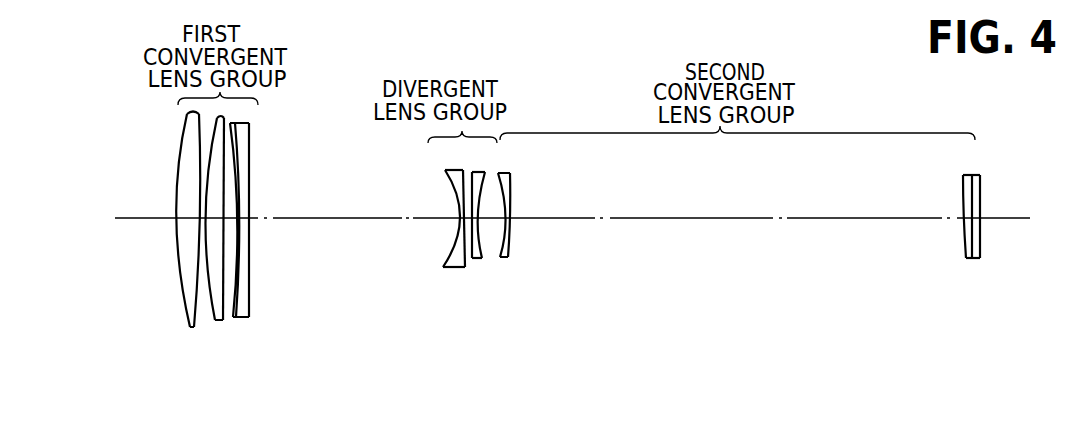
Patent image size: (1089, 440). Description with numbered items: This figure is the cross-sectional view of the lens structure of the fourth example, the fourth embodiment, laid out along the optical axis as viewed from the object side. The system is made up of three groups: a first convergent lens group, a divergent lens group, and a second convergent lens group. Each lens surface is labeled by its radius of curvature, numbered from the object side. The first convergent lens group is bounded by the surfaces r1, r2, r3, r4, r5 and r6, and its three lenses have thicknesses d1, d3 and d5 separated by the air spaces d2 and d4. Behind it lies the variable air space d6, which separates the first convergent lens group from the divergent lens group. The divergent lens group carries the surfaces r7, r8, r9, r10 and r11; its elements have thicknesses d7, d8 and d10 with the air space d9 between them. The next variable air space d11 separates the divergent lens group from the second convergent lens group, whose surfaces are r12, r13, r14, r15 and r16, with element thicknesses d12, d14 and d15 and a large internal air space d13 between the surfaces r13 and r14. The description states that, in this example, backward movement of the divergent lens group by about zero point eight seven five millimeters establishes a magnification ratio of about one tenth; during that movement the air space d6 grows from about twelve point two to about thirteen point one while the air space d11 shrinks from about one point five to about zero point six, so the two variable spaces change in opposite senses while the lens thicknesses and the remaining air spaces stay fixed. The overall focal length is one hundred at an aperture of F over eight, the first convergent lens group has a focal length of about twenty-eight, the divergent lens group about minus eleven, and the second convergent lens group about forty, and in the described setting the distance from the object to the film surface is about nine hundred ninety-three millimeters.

The radius of curvature of first lens surface r1 is at (182, 304).
The radius of curvature of second lens surface r2 is at (195, 320).
The radius of curvature of third lens surface r3 is at (212, 305).
The radius of curvature of fourth lens surface r4 is at (228, 318).
The radius of curvature of fifth lens surface r5 is at (240, 312).
The radius of curvature of sixth lens surface r6 is at (252, 310).
The radius of curvature of seventh lens surface r7 is at (443, 268).
The radius of curvature of eighth lens surface r8 is at (453, 268).
The radius of curvature of ninth lens surface r9 is at (467, 265).
The radius of curvature of tenth lens surface r10 is at (476, 262).
The radius of curvature of eleventh lens surface r11 is at (483, 265).
The radius of curvature of twelfth lens surface r12 is at (498, 262).
The radius of curvature of thirteenth lens surface r13 is at (506, 262).
The radius of curvature of fourteenth lens surface r14 is at (964, 257).
The radius of curvature of fifteenth lens surface r15 is at (970, 258).
The radius of curvature of sixteenth lens surface r16 is at (980, 258).
The first lens thickness d1 is at (202, 216).
The first air space d2 is at (200, 201).
The second lens thickness d3 is at (233, 217).
The second air space d4 is at (233, 200).
The third lens thickness d5 is at (242, 216).
The variable air space between first convergent group and divergent group d6 is at (370, 215).
The fourth lens thickness d7 is at (459, 216).
The fifth lens thickness d8 is at (460, 221).
The third air space d9 is at (502, 194).
The sixth lens thickness d10 is at (478, 221).
The variable air space between divergent group and second convergent group d11 is at (485, 199).
The seventh lens thickness d12 is at (511, 210).
The fourth air space d13 is at (705, 202).
The eighth lens thickness d14 is at (967, 213).
The ninth lens thickness d15 is at (978, 213).